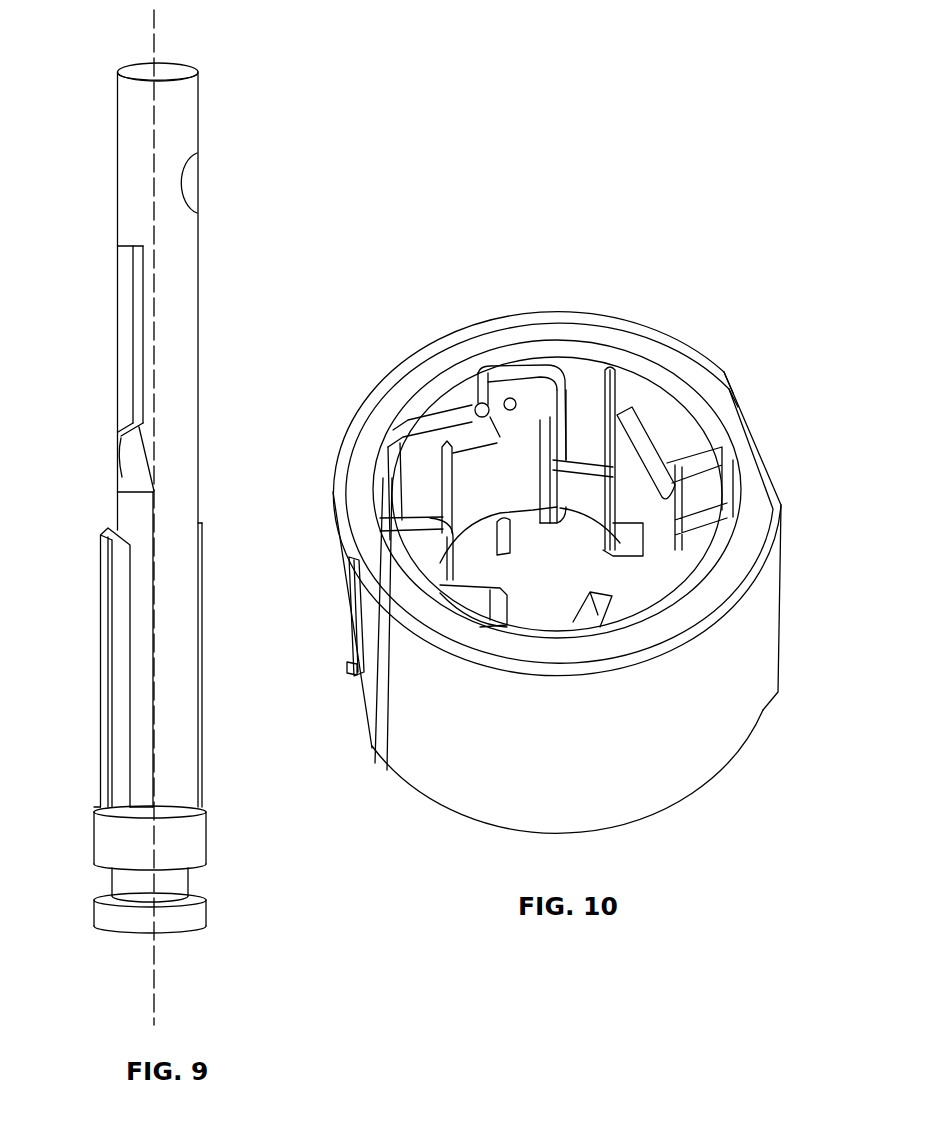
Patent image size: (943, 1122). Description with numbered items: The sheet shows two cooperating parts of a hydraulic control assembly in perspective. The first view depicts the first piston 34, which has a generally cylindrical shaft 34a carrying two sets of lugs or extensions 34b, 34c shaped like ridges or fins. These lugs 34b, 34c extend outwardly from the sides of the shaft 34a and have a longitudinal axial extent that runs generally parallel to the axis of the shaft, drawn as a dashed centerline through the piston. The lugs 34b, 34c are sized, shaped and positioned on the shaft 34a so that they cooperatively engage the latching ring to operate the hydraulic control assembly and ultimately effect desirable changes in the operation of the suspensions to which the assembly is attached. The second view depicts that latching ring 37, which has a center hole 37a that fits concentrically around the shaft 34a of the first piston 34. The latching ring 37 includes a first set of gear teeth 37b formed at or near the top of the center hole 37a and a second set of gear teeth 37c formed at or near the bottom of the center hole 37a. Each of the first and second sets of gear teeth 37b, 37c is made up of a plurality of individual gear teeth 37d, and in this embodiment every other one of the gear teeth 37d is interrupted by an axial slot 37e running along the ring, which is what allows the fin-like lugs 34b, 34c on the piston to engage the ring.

In FIG. 9, the first piston 34 is at (123, 118).
In FIG. 9, the shaft 34a is at (185, 352).
In FIG. 9, the lugs 34b is at (127, 396).
In FIG. 9, the lugs 34c is at (122, 688).
In FIG. 10, the latching ring 37 is at (347, 542).
In FIG. 10, the center hole 37a is at (597, 568).
In FIG. 10, the first set of gear teeth 37b is at (415, 442).
In FIG. 10, the second set of gear teeth 37c is at (510, 556).
In FIG. 10, the gear teeth 37d is at (663, 418).
In FIG. 10, the axial slot 37e is at (584, 388).